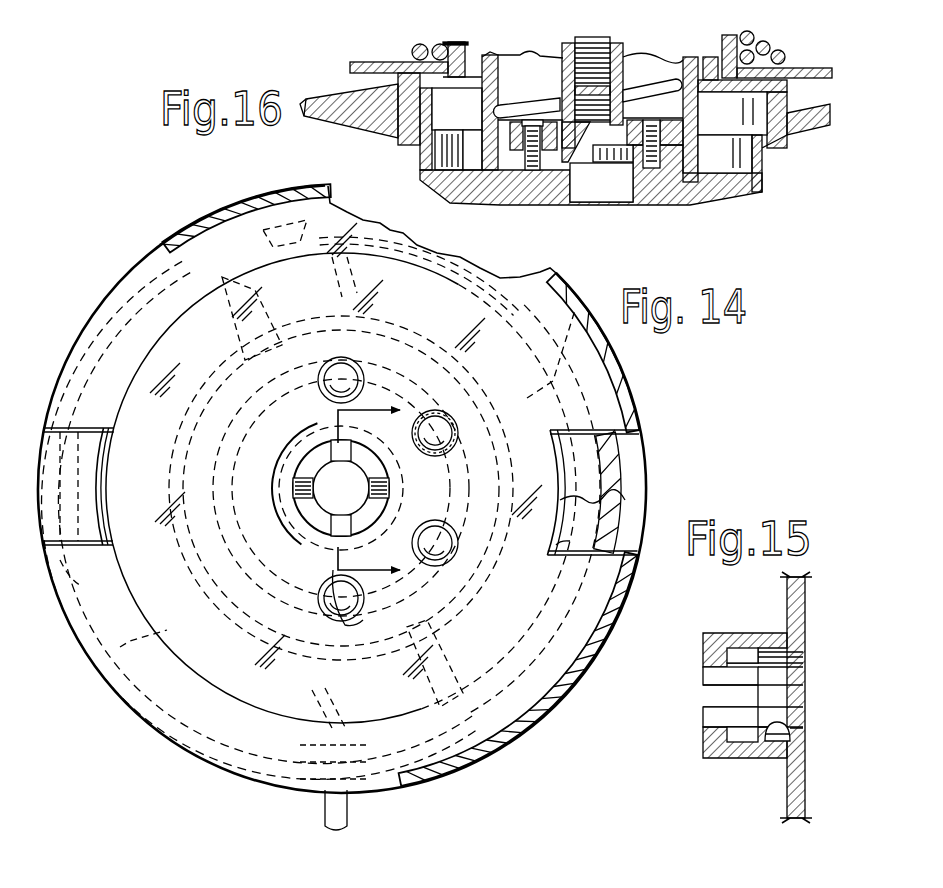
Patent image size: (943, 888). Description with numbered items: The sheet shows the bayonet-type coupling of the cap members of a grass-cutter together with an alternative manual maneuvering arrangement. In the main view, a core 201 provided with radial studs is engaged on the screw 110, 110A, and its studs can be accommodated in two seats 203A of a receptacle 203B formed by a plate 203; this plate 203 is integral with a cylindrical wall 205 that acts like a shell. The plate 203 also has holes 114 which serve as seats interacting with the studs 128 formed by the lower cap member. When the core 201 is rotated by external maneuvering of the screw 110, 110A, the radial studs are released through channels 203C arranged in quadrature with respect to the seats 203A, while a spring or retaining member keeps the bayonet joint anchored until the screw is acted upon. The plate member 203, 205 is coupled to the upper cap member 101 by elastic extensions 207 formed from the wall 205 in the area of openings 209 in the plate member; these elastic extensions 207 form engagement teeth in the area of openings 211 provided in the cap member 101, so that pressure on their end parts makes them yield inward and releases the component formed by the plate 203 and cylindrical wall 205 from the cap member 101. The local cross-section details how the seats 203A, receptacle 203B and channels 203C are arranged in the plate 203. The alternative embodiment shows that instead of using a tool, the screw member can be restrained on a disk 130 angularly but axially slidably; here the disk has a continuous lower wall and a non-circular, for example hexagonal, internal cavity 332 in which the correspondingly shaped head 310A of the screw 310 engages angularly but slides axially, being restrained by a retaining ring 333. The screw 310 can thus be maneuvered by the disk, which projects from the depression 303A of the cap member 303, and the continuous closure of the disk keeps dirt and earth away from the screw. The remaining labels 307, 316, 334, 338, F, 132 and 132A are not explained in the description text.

In FIG. 14, the upper cap member 101 is at (203, 743).
In FIG. 14, the core 201 is at (322, 502).
In FIG. 14, the plate 203 is at (225, 212).
In FIG. 15, the plate 203 is at (785, 802).
In FIG. 14, the seats 203A is at (307, 414).
In FIG. 15, the seats 203A is at (738, 657).
In FIG. 15, the receptacle 203B is at (763, 741).
In FIG. 14, the channels 203C is at (288, 492).
In FIG. 15, the channels 203C is at (713, 700).
In FIG. 14, the cylindrical wall 205 is at (222, 597).
In FIG. 14, the elastic extensions 207 is at (90, 523).
In FIG. 14, the openings 209 is at (580, 543).
In FIG. 14, the openings 211 is at (45, 548).
In FIG. 14, the holes 114 is at (455, 433).
In FIG. 14, the studs 128 is at (438, 428).
In FIG. 16, the cap member 303 is at (382, 92).
In FIG. 16, the depression 303A is at (418, 141).
In FIG. 16, the worm gear 307 is at (597, 37).
In FIG. 16, the screw 310 is at (560, 60).
In FIG. 16, the head 310A is at (662, 200).
In FIG. 16, the support plate 316 is at (378, 58).
In FIG. 16, the internal cavity 332 is at (600, 185).
In FIG. 16, the retaining ring 333 is at (516, 108).
In FIG. 16, the support block 334 is at (478, 151).
In FIG. 16, the pin 338 is at (662, 62).
In FIG. 16, the frame F is at (760, 46).
In FIG. 16, the disk 130 is at (168, 0).
In FIG. 16, the member 132 is at (305, 0).
In FIG. 16, the member portion 132A is at (232, 0).
In FIG. 16, the screw 110 is at (350, 0).
In FIG. 16, the screw 110A is at (402, 15).